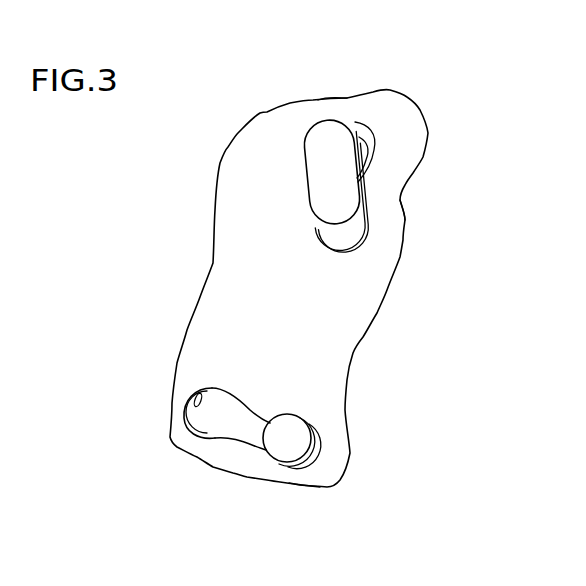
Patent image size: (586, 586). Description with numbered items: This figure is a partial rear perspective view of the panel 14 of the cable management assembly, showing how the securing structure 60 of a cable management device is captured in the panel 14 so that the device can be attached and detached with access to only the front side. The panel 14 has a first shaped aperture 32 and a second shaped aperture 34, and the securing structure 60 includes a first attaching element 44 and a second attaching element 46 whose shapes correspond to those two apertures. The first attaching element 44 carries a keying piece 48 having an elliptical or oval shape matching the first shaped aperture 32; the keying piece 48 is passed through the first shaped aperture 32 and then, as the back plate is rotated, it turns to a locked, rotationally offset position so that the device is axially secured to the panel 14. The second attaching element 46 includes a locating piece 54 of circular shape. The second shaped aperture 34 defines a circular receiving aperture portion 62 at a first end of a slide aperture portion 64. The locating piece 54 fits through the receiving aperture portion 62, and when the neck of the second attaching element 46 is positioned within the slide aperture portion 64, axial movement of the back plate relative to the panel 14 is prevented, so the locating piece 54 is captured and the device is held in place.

The panel 14 is at (428, 93).
The first shaped aperture 32 is at (373, 143).
The second shaped aperture 34 is at (249, 412).
The first attaching element 44 is at (332, 105).
The second attaching element 46 is at (306, 489).
The keying piece 48 is at (328, 160).
The locating piece 54 is at (290, 426).
The securing structure 60 is at (378, 226).
The receiving aperture portion 62 is at (193, 415).
The slide aperture portion 64 is at (243, 444).